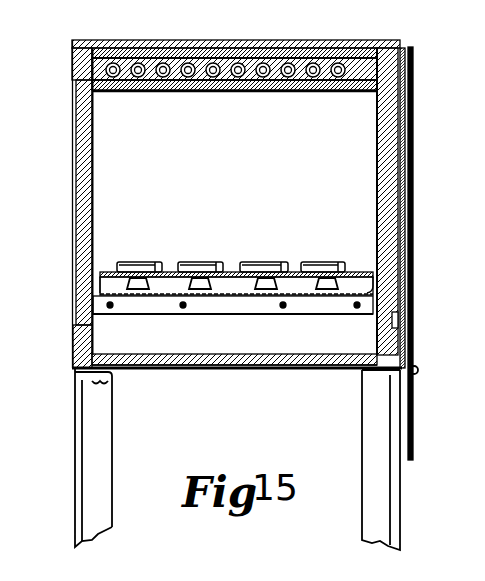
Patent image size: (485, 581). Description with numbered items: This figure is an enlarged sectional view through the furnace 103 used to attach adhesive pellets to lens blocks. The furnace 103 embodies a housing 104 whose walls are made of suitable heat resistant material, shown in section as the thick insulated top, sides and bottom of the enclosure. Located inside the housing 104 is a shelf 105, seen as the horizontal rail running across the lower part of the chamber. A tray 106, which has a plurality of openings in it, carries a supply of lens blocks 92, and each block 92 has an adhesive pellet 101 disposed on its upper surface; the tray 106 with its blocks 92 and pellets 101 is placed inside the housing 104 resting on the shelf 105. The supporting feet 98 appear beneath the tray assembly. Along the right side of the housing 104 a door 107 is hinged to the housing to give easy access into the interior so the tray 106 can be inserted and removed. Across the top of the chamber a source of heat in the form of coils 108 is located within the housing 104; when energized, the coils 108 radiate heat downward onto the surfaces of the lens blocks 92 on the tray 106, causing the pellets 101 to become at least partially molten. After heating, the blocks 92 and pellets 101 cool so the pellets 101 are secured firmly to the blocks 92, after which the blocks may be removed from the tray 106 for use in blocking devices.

The lens block 92 is at (170, 268).
The support feet 98 is at (192, 286).
The adhesive pellet 101 is at (136, 262).
The furnace 103 is at (416, 132).
The housing 104 is at (84, 195).
The shelf 105 is at (232, 306).
The tray 106 is at (104, 272).
The door 107 is at (414, 258).
The coils 108 is at (243, 91).